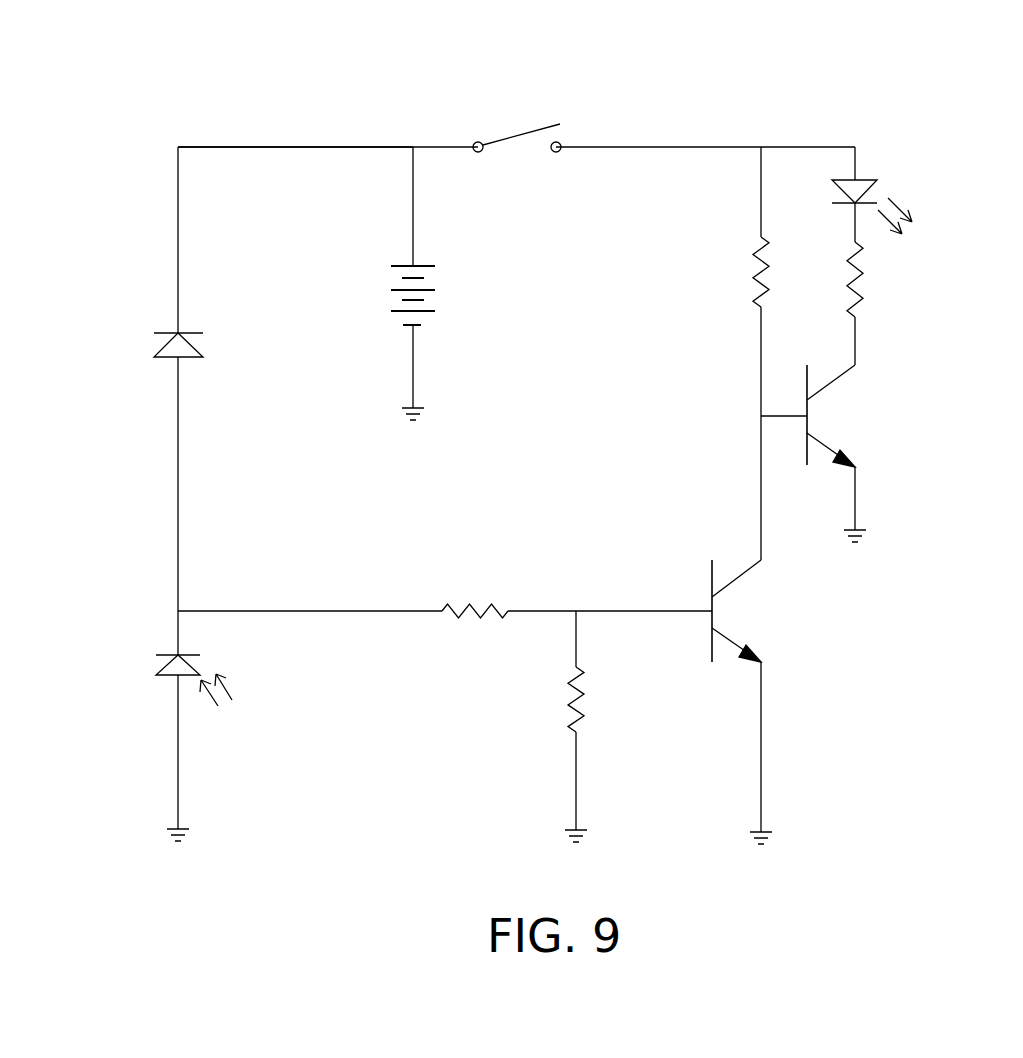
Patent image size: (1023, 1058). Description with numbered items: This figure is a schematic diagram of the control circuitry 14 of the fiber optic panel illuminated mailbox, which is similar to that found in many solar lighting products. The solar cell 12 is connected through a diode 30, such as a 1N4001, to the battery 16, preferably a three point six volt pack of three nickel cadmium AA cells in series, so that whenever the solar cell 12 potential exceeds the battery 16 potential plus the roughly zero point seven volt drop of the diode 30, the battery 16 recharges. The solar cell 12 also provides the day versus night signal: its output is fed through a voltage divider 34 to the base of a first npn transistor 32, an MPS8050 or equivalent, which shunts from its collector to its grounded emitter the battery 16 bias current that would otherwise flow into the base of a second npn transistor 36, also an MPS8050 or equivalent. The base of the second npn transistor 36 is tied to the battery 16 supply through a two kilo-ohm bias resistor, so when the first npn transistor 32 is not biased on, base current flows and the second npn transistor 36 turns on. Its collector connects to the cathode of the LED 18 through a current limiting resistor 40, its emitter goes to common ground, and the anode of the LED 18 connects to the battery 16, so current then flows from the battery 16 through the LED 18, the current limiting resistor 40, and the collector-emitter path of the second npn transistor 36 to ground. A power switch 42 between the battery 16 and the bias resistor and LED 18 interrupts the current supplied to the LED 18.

The control circuitry 14 is at (306, 110).
The power switch 42 is at (512, 125).
The battery 16 is at (425, 318).
The diode 30 is at (190, 358).
The light emitting diode (LED) 18 is at (910, 198).
The current limiting resistor 40 is at (865, 295).
The second npn transistor 36 is at (838, 428).
The first npn transistor 32 is at (755, 630).
The voltage divider 34 is at (570, 685).
The solar cell 12 is at (238, 675).